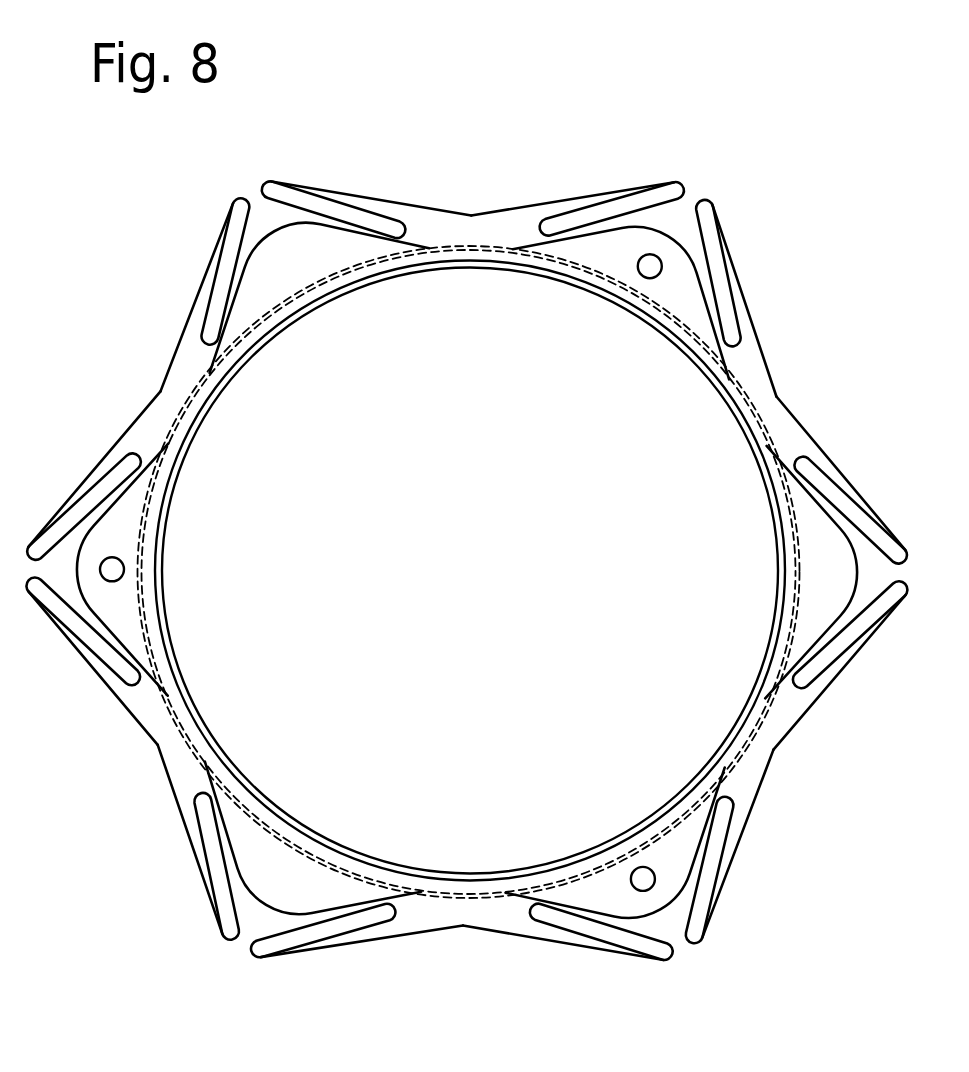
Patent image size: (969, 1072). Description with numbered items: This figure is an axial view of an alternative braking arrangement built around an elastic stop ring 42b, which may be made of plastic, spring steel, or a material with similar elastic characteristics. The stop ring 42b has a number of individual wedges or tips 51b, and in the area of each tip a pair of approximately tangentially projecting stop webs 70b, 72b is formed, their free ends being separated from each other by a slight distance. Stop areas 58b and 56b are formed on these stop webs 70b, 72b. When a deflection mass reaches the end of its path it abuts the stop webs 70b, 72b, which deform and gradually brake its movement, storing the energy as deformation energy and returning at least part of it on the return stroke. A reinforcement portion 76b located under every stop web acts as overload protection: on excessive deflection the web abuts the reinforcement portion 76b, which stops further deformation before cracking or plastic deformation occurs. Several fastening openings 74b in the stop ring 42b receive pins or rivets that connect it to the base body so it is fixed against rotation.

The stop ring 42b is at (471, 215).
The wedges or tips 51b is at (339, 178).
The stop area 56b is at (205, 276).
The stop area 58b is at (380, 201).
The stop web 70b is at (272, 183).
The stop web 72b is at (239, 201).
The fastening opening 74b is at (650, 267).
The reinforcement portion 76b is at (275, 238).